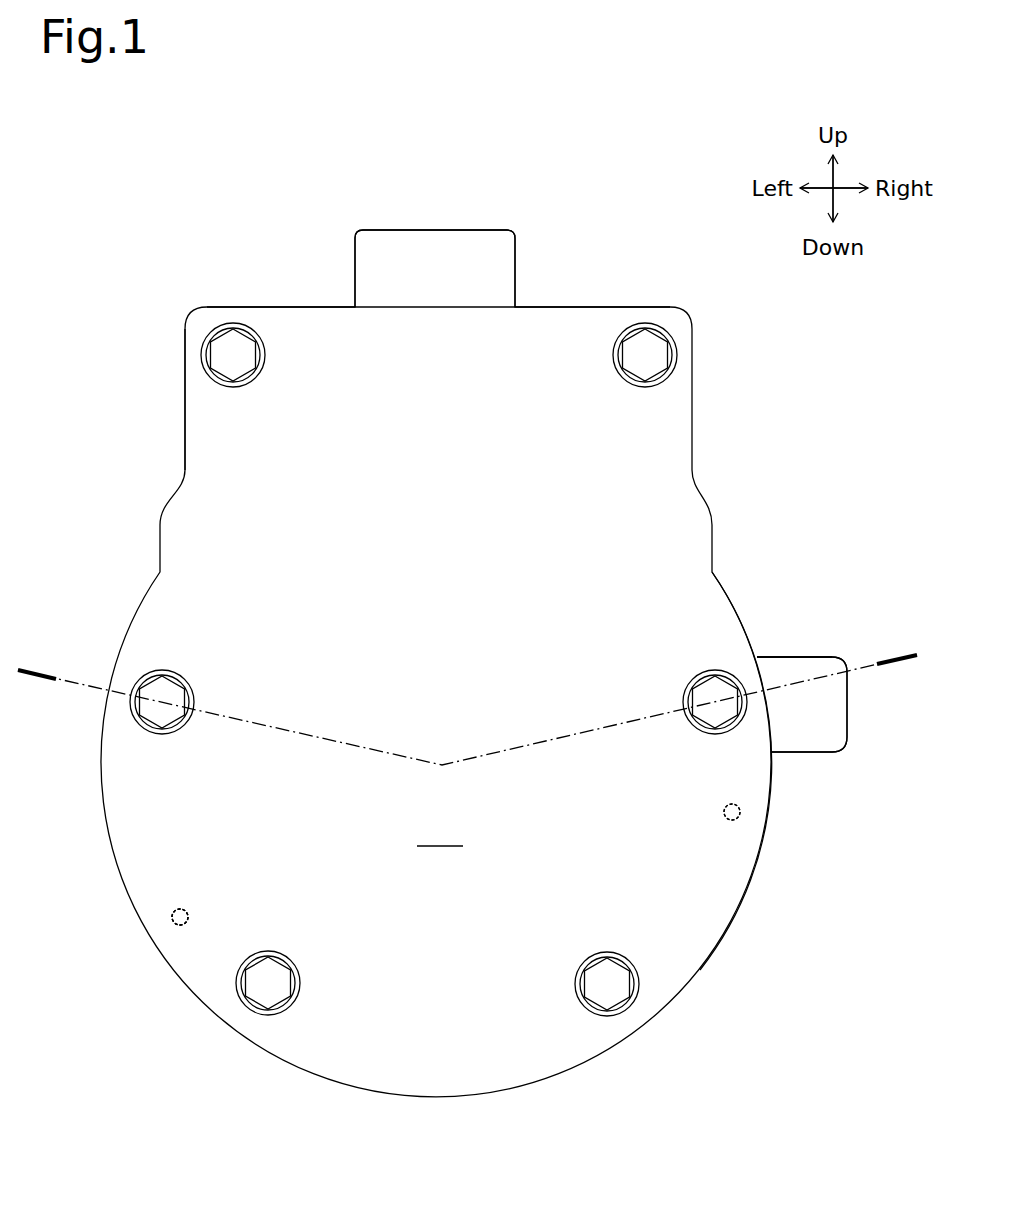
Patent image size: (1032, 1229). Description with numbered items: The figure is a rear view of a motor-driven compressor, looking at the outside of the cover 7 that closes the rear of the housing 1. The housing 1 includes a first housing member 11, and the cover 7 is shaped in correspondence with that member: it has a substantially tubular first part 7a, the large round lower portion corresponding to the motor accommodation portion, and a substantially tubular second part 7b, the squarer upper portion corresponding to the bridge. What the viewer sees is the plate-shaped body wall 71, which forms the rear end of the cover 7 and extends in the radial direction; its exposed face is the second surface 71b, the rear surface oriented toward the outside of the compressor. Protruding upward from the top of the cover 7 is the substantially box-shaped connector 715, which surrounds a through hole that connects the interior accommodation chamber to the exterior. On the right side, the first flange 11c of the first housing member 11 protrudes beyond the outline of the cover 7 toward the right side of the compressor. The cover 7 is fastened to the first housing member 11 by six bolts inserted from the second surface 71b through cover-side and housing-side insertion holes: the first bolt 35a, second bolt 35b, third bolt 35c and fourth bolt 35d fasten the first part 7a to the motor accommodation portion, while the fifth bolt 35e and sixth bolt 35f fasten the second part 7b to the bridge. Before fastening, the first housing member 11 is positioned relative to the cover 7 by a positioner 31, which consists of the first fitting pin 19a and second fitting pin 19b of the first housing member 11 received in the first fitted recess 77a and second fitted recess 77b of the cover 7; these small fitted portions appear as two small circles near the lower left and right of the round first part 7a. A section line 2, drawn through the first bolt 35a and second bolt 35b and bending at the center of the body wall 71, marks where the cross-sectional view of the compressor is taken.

The housing 1 is at (806, 650).
The section line II-II 2 is at (37, 682).
The cover 7 is at (604, 266).
The first part 7a is at (695, 986).
The second part 7b is at (183, 420).
The first housing member 11 is at (802, 704).
The first flange 11c is at (808, 745).
The first fitting pin 19a is at (172, 924).
The second fitting pin 19b is at (726, 820).
The positioner 31 is at (173, 898).
The first bolt 35a is at (162, 692).
The second bolt 35b is at (713, 692).
The third bolt 35c is at (280, 983).
The fourth bolt 35d is at (595, 982).
The fifth bolt 35e is at (240, 354).
The sixth bolt 35f is at (637, 355).
The body wall 71 is at (558, 474).
The second surface 71b is at (442, 829).
The connector 715 is at (476, 240).
The first fitted recess 77a is at (188, 906).
The second fitted recess 77b is at (726, 804).